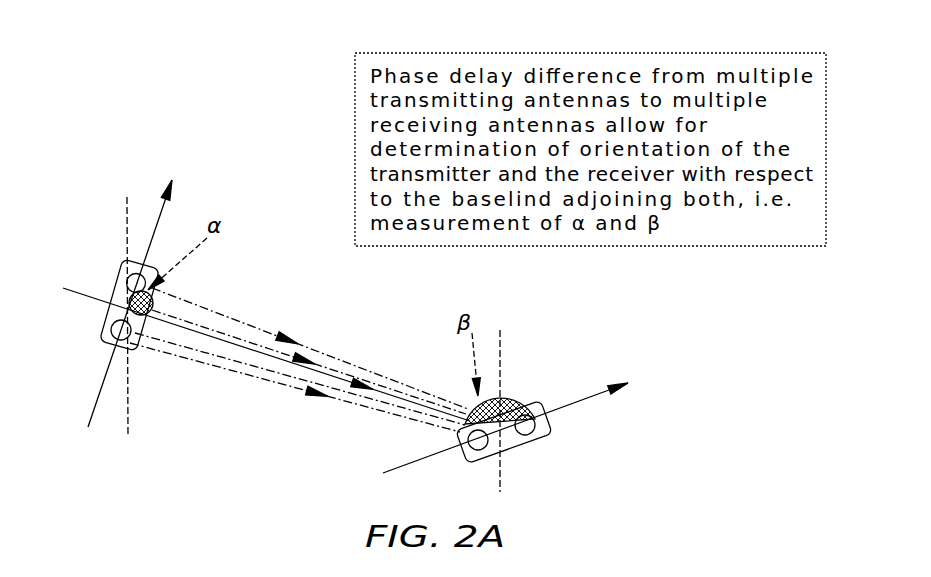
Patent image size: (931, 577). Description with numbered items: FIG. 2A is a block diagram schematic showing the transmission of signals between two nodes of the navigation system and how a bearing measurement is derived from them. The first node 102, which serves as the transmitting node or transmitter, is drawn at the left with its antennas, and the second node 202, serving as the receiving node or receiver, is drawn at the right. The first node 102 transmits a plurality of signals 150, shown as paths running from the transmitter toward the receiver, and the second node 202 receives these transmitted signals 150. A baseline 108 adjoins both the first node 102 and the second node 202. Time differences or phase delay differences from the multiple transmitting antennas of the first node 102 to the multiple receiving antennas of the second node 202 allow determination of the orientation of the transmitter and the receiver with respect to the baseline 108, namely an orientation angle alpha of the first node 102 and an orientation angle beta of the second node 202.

The first node 102 is at (93, 343).
The baseline 108 is at (84, 292).
The signals 150 is at (323, 350).
The second node 202 is at (557, 435).